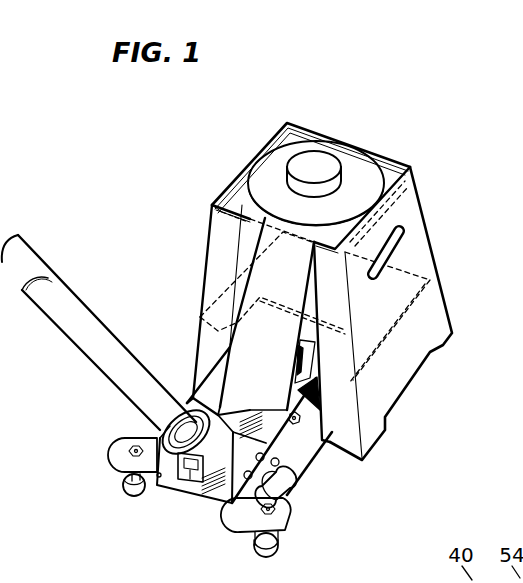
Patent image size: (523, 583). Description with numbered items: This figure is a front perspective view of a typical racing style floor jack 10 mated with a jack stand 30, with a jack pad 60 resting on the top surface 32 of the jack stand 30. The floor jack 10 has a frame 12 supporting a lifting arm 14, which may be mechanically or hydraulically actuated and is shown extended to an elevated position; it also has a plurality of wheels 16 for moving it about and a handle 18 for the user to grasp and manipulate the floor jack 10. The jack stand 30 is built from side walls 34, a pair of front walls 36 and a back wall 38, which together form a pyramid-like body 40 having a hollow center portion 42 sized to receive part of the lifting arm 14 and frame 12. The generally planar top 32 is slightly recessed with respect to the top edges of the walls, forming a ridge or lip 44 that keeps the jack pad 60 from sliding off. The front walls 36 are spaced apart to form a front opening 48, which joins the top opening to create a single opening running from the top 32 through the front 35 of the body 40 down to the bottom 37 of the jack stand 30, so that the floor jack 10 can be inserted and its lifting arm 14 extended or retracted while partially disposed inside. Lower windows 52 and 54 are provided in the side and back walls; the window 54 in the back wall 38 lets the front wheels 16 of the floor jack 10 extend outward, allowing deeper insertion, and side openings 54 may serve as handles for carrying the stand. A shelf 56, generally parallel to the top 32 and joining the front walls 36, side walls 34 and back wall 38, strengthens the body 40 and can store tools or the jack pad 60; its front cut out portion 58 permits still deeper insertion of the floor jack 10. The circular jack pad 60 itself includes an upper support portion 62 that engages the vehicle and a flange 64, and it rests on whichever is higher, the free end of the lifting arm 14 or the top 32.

The floor jack 10 is at (173, 409).
The frame 12 is at (297, 452).
The lifting arm 14 is at (264, 349).
The wheels 16 is at (124, 487).
The handle 18 is at (70, 305).
The jack stand 30 is at (315, 287).
The top surface 32 is at (388, 172).
The side walls 34 is at (405, 334).
The front 35 is at (217, 298).
The front walls 36 is at (212, 257).
The bottom 37 is at (350, 461).
The back wall 38 is at (418, 178).
The pyramid-like body 40 is at (233, 260).
The hollow center portion 42 is at (251, 219).
The ridge or lip 44 is at (287, 165).
The front opening 48 is at (255, 234).
The lower windows 52 is at (422, 375).
The window 54 is at (402, 234).
The shelf 56 is at (408, 300).
The front cut out portion 58 is at (382, 432).
The jack pad 60 is at (314, 165).
The upper support portion 62 is at (318, 160).
The flange 64 is at (289, 150).